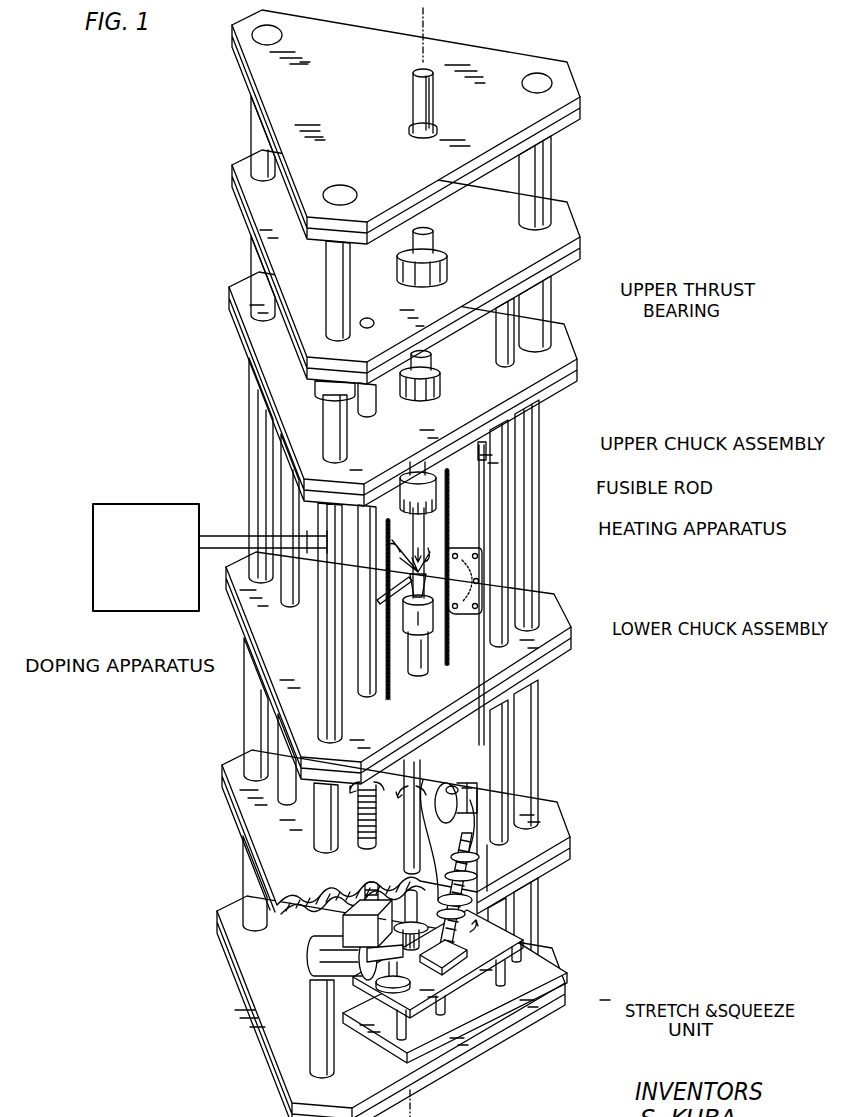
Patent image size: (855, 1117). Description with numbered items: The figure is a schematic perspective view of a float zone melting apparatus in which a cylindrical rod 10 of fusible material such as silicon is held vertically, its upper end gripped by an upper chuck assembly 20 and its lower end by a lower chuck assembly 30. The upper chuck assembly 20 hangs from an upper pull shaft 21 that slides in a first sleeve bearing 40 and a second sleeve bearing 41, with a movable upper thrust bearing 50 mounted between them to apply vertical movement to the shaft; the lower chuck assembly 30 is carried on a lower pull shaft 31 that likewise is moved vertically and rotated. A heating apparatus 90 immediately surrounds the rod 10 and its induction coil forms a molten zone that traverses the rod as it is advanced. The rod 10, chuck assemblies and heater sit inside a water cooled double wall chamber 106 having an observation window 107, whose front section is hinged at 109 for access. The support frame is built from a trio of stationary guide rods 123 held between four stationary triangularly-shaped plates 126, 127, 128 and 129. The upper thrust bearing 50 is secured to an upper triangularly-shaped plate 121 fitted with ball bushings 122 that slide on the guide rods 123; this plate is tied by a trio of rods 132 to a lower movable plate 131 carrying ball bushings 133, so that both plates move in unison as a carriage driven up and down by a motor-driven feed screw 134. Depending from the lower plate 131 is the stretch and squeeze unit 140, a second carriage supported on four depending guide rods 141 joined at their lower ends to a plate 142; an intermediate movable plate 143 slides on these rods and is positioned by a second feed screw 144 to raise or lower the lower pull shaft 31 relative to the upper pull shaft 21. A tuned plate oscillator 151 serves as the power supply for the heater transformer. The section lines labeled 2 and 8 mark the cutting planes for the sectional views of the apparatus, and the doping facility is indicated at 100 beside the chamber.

The section line 2- 2 is at (424, 26).
The section line 8- 8 is at (203, 733).
The cylindrical rod 10 is at (428, 524).
The upper chuck assembly 20 is at (432, 476).
The upper pull shaft 21 is at (433, 361).
The lower chuck assembly 30 is at (435, 617).
The lower pull shaft 31 is at (422, 770).
The first sleeve bearing 40 is at (441, 383).
The second sleeve bearing 41 is at (437, 130).
The upper thrust bearing 50 is at (450, 278).
The heating apparatus 90 is at (435, 539).
The doping apparatus 100 is at (383, 594).
The chamber 106 is at (382, 678).
The observation window 107 is at (482, 583).
The hinge 109 is at (478, 448).
The upper triangularly-shaped plate 121 is at (581, 128).
The ball bushings 122 is at (581, 260).
The stationary guide rods 123 is at (256, 262).
The stationary triangularly-shaped plate 126 is at (583, 96).
The stationary triangularly-shaped plate 127 is at (580, 362).
The stationary triangularly-shaped plate 128 is at (572, 645).
The stationary triangularly-shaped plate 129 is at (257, 1016).
The lower movable plate 131 is at (568, 835).
The rods 132 is at (505, 332).
The ball bushings 133 is at (548, 866).
The feed screw 134 is at (363, 847).
The stretch and squeeze unit 140 is at (461, 955).
The depending guide rods 141 is at (522, 974).
The plate 142 is at (464, 1023).
The intermediate movable plate 143 is at (540, 943).
The second feed screw 144 is at (492, 993).
The tuned plate oscillator 151 is at (145, 510).